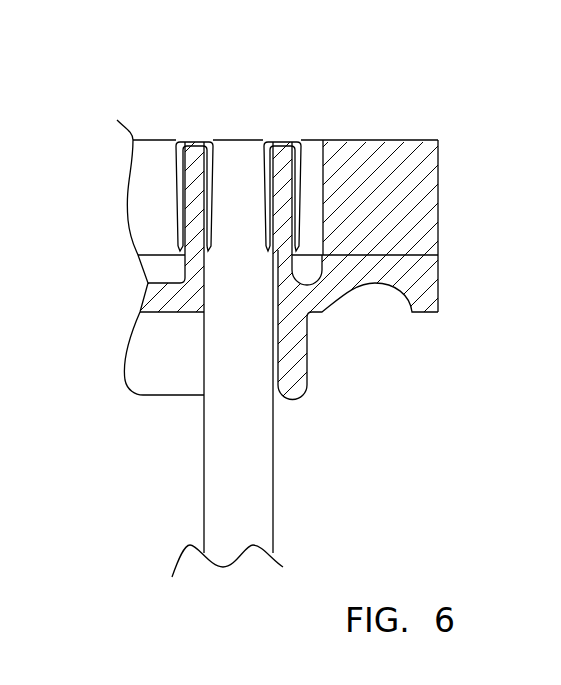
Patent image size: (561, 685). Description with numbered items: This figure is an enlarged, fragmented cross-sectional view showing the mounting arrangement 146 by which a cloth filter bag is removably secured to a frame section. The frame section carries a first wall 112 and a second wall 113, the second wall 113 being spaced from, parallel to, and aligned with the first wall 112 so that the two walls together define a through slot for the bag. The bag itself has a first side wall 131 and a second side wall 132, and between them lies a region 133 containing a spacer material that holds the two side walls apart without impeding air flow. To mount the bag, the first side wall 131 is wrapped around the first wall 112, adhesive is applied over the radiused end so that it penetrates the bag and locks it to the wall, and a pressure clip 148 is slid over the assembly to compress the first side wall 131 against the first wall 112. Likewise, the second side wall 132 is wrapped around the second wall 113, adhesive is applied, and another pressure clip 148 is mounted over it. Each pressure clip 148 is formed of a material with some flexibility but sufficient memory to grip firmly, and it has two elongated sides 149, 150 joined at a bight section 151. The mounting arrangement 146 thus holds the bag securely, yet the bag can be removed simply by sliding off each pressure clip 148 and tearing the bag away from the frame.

The mounting arrangement 146 is at (152, 117).
The pressure clip 148 is at (243, 127).
The bight section 151 is at (193, 140).
The first wall 112 is at (288, 155).
The second wall 113 is at (198, 163).
The elongated side 149 is at (178, 212).
The elongated side 150 is at (214, 203).
The region 133 is at (218, 447).
The first side wall 131 is at (273, 497).
The second side wall 132 is at (204, 508).